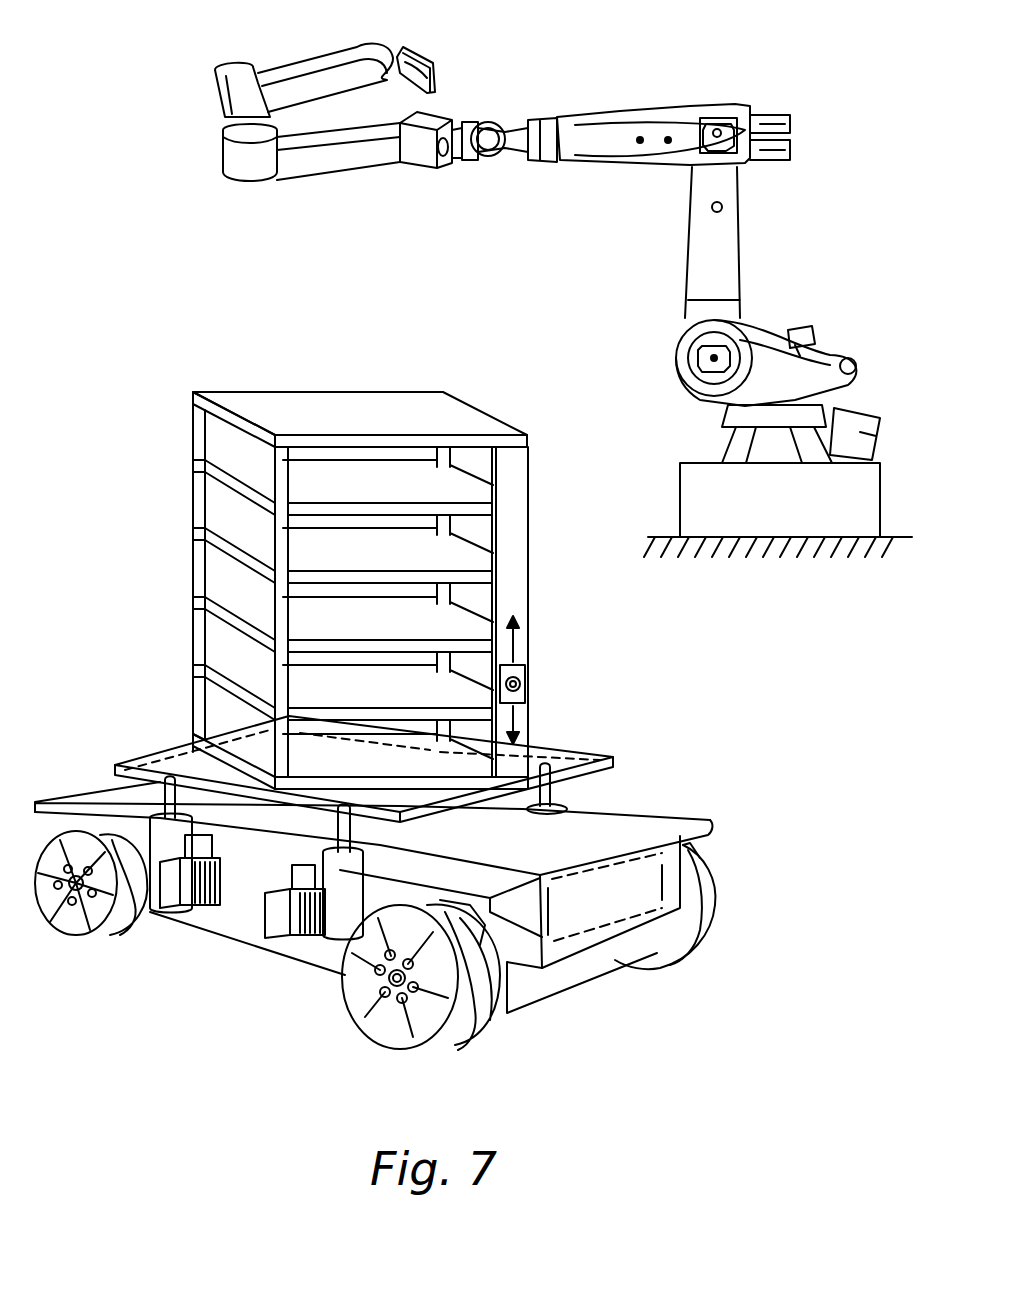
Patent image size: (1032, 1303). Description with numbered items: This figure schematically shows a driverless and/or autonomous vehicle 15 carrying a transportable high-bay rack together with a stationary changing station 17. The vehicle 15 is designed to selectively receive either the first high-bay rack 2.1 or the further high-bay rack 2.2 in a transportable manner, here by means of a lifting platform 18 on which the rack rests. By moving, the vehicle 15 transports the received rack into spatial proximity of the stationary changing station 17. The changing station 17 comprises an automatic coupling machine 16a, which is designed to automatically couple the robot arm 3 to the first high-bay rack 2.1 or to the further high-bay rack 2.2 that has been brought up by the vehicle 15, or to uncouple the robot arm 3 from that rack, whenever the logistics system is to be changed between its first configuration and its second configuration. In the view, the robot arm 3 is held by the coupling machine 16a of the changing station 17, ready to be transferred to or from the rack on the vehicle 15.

The robot arm 3 is at (233, 93).
The automatic coupling machine 16a is at (680, 113).
The stationary changing station 17 is at (822, 306).
The first high-bay rack 2.1 is at (400, 553).
The further high-bay rack 2.2 is at (455, 412).
The lifting platform 18 is at (570, 757).
The driverless and/or autonomous vehicle 15 is at (603, 833).